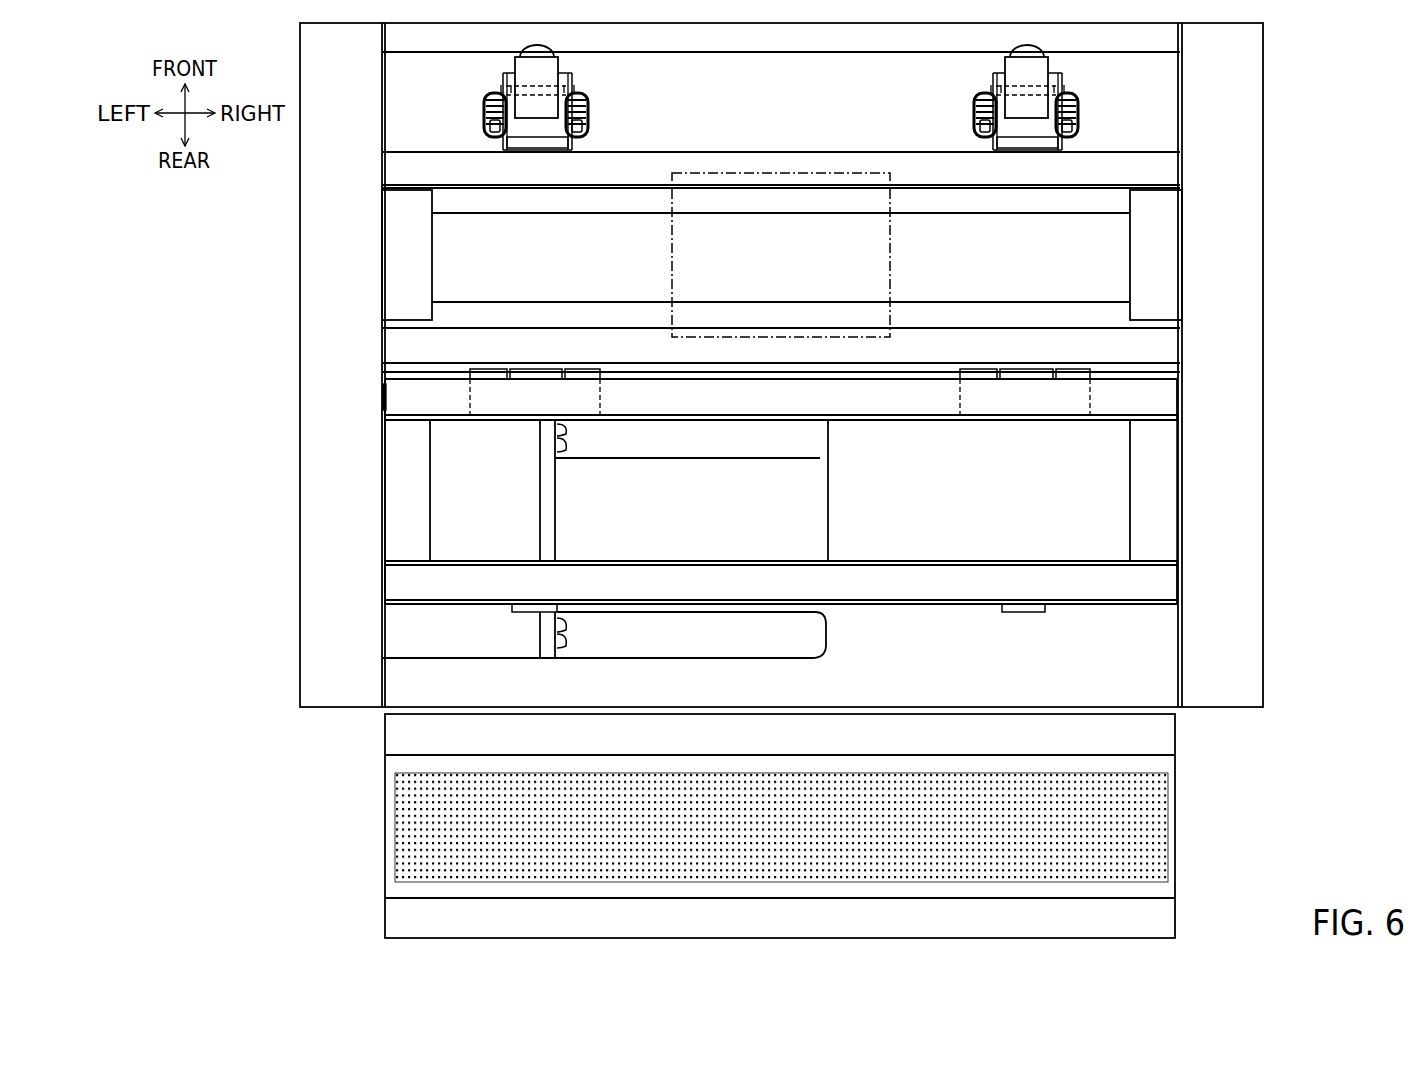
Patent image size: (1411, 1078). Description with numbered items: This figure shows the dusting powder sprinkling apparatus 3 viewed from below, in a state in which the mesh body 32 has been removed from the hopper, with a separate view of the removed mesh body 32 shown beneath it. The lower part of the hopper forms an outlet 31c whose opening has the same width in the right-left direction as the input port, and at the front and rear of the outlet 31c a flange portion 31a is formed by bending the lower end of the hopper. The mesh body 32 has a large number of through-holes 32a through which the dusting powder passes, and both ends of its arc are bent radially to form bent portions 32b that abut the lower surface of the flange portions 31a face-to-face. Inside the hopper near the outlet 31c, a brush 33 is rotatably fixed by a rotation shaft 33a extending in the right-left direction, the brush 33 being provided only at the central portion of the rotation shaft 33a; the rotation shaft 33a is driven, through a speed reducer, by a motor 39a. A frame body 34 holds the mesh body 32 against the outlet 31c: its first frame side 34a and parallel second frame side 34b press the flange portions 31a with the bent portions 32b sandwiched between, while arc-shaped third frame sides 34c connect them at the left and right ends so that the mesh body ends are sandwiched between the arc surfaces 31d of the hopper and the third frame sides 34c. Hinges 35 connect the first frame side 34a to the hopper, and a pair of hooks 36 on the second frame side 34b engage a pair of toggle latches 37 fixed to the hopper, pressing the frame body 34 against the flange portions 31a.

The dusting powder sprinkling apparatus 3 is at (1295, 223).
The flange portion 31a is at (750, 165).
The outlet 31c is at (1032, 328).
The arc surface 31d is at (405, 288).
The mesh body 32 is at (1178, 875).
The through-holes 32a is at (1167, 802).
The bent portion 32b is at (1140, 733).
The brush 33 is at (890, 247).
The rotation shaft 33a is at (462, 258).
The frame body 34 is at (780, 516).
The first frame side 34a is at (893, 398).
The second frame side 34b is at (885, 585).
The third frame side 34c is at (408, 492).
The hinge 35 is at (470, 400).
The hook 36 is at (525, 614).
The toggle latch 37 is at (598, 100).
The motor 39a is at (828, 510).